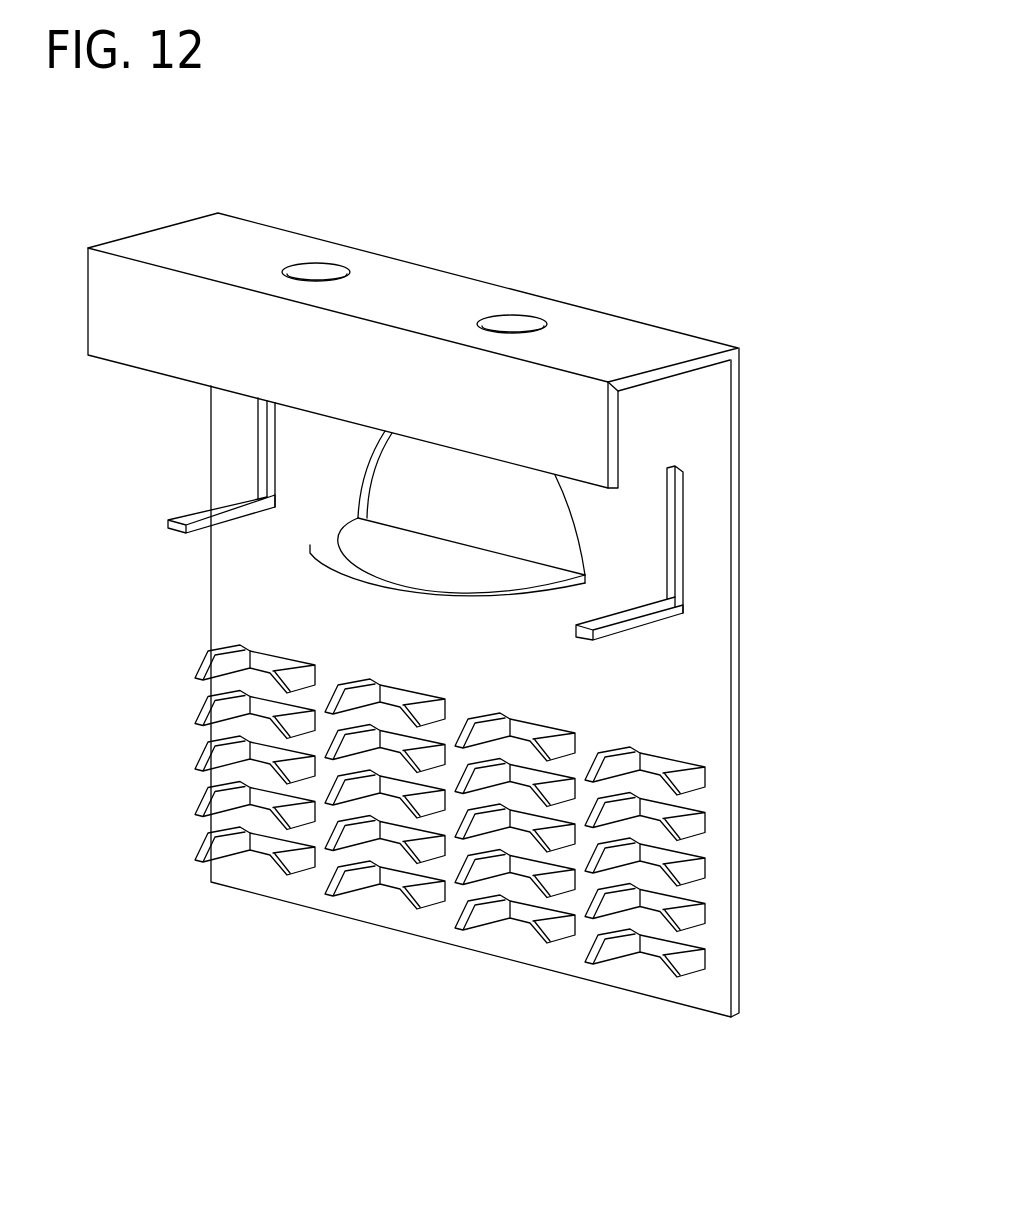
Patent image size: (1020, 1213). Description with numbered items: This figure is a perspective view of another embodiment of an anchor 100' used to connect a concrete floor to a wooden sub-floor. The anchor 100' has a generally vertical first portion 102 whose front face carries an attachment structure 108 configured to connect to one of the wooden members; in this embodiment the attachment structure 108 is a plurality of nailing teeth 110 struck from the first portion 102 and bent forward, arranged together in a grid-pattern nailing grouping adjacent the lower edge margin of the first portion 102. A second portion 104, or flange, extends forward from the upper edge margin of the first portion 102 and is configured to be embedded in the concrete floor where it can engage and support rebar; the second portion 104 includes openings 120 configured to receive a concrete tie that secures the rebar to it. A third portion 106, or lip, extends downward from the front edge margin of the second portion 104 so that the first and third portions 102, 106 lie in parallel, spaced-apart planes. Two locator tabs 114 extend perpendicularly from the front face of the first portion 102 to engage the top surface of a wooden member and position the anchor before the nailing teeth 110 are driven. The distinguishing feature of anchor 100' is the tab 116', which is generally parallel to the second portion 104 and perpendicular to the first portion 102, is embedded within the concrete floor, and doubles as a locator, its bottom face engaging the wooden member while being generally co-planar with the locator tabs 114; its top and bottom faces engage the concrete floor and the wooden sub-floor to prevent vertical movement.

The anchor 100' is at (464, 619).
The first portion 102 is at (435, 662).
The second portion 104 is at (433, 313).
The third portion 106 is at (360, 383).
The attachment structure 108 is at (178, 832).
The nailing teeth 110 is at (615, 943).
The locator tab 114 is at (237, 514).
The tab 116' is at (447, 559).
The openings 120 is at (318, 277).